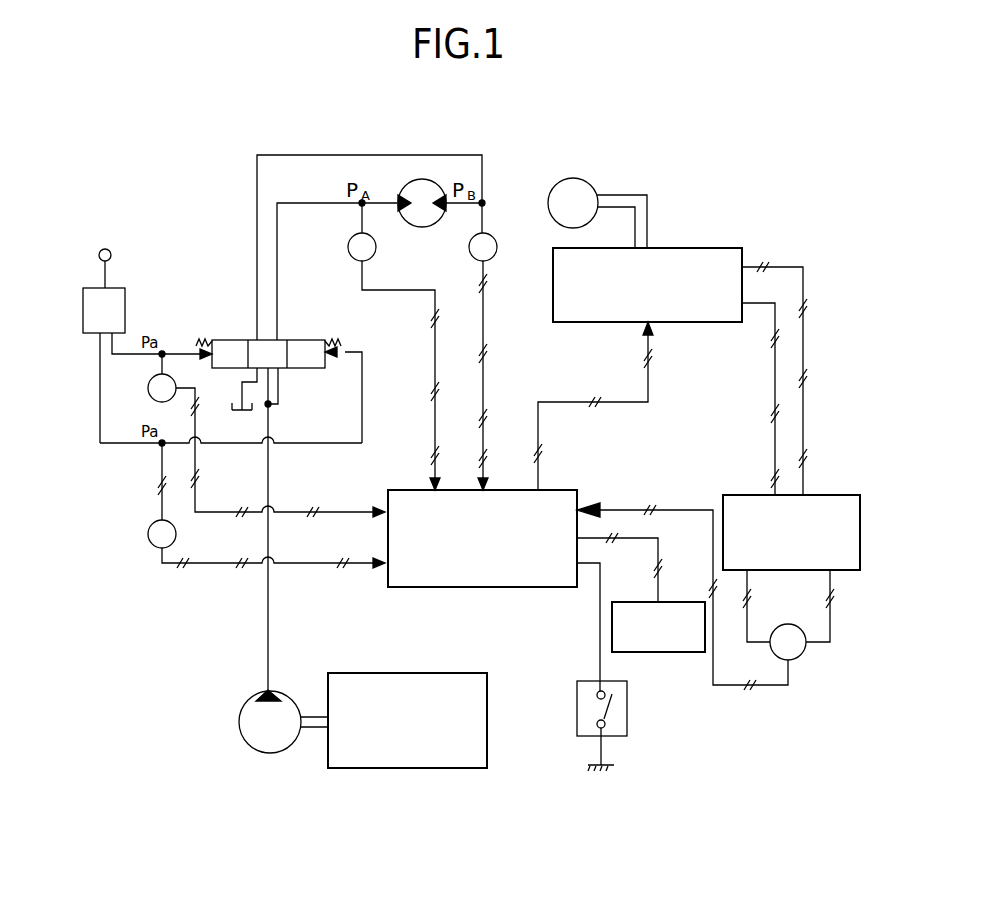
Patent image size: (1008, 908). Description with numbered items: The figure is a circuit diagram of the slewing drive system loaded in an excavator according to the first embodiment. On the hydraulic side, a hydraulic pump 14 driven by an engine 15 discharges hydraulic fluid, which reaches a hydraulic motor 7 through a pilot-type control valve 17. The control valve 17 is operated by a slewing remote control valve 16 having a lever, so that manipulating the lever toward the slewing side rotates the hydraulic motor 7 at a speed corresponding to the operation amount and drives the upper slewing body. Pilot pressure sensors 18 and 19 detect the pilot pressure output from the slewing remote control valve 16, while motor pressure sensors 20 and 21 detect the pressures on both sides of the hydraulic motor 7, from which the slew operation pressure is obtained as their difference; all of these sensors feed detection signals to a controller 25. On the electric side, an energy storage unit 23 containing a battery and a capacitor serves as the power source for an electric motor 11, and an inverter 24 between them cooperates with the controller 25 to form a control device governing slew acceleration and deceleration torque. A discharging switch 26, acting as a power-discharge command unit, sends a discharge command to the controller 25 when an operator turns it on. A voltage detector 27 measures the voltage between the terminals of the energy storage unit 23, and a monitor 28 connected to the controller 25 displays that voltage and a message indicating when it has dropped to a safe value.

The hydraulic motor 7 is at (432, 178).
The electric motor 11 is at (578, 178).
The hydraulic pump 14 is at (250, 700).
The engine 15 is at (408, 770).
The slewing remote control valve 16 is at (126, 298).
The control valve 17 is at (233, 340).
The pilot pressure sensor 18 is at (148, 534).
The pilot pressure sensor 19 is at (148, 388).
The motor pressure sensor 20 is at (348, 245).
The motor pressure sensor 21 is at (496, 254).
The energy storage unit 23 is at (828, 495).
The inverter 24 is at (690, 248).
The controller 25 is at (505, 588).
The discharging switch 26 is at (577, 708).
The voltage detector 27 is at (806, 658).
The monitor 28 is at (672, 655).